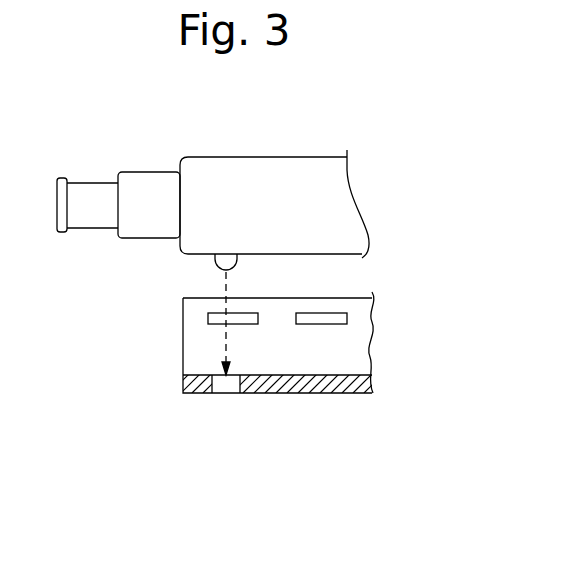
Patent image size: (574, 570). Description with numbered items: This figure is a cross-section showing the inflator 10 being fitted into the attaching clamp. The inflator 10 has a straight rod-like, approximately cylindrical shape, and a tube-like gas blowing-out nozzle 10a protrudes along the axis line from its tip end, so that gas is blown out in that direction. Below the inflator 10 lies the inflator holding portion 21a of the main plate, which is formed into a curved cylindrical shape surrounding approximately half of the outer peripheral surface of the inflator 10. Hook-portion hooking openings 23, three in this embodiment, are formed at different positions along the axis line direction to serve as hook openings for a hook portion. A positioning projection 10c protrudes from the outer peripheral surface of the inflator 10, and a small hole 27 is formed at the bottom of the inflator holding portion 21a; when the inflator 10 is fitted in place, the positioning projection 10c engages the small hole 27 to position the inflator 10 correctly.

The inflator 10 is at (278, 141).
The gas blowing-out nozzle 10a is at (92, 193).
The positioning projection 10c is at (215, 265).
The inflator holding portion 21a is at (340, 375).
The hook-portion hooking opening 23 is at (208, 320).
The small hole 27 is at (222, 393).